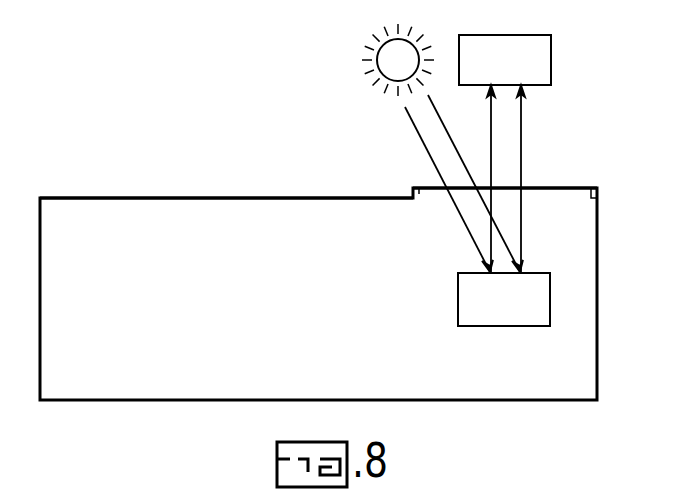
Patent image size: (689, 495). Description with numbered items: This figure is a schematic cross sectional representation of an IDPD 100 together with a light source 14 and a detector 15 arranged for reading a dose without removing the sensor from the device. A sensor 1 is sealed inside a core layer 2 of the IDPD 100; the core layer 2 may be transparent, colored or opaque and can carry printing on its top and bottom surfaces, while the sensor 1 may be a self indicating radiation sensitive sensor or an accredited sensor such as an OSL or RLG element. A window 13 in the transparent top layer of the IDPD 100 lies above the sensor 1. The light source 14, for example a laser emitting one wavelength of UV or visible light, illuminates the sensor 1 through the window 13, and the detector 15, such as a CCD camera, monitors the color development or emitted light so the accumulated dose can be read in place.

The sensor 1 is at (530, 296).
The core layer 2 is at (153, 225).
The window 13 is at (545, 187).
The light source 14 is at (398, 53).
The detector 15 is at (527, 56).
The IDPD 100 is at (510, 402).